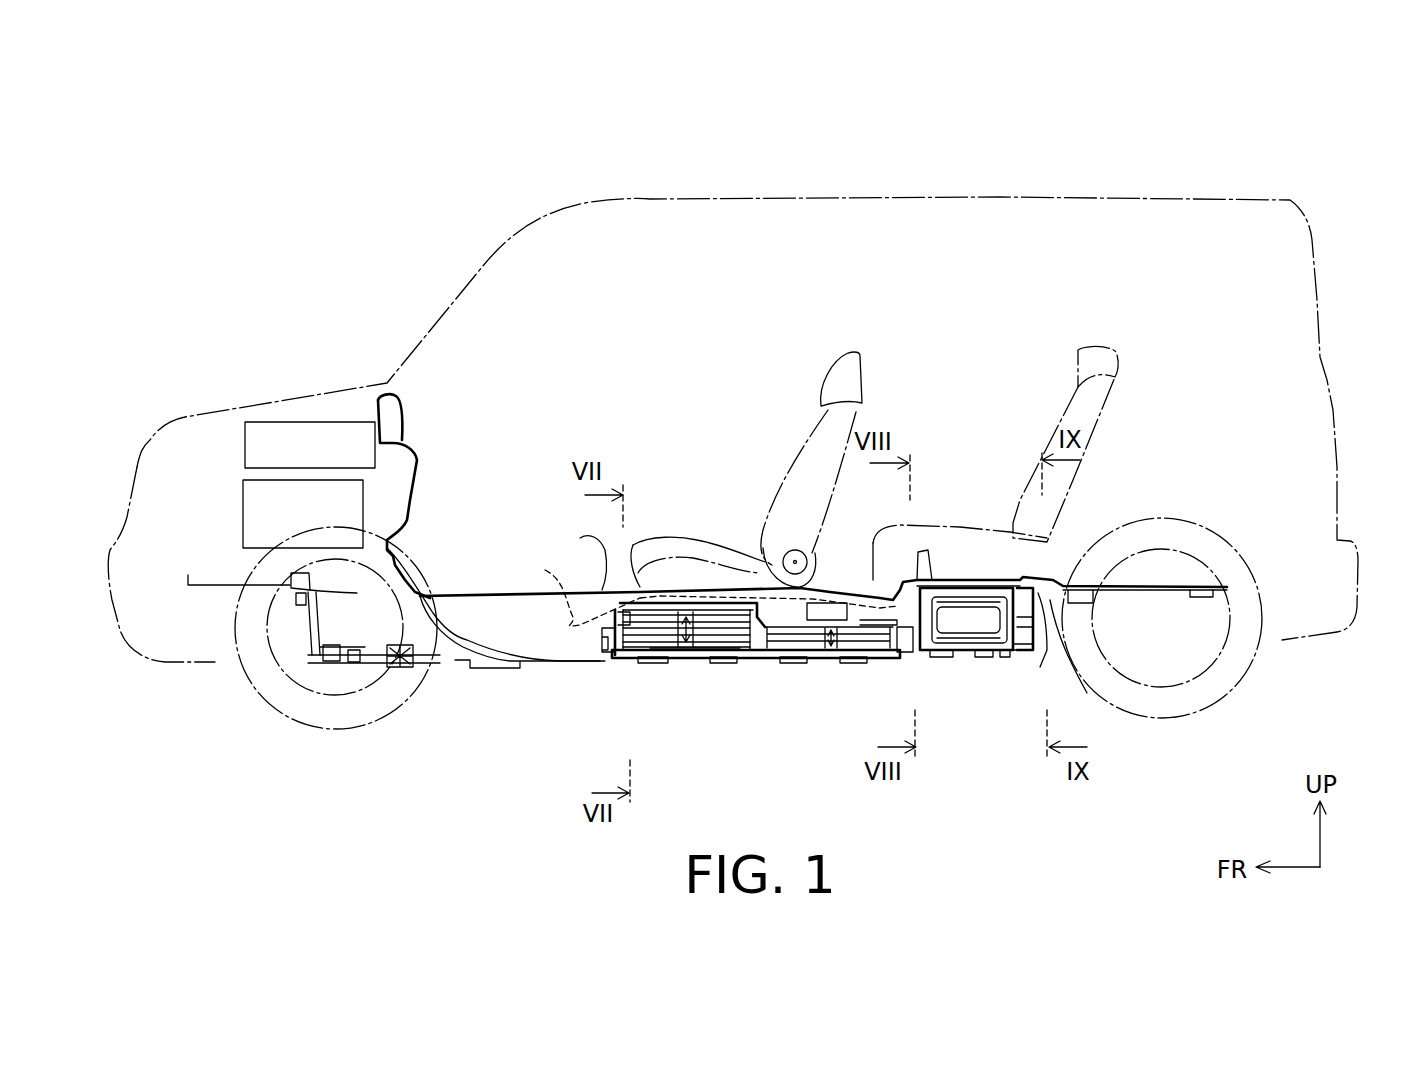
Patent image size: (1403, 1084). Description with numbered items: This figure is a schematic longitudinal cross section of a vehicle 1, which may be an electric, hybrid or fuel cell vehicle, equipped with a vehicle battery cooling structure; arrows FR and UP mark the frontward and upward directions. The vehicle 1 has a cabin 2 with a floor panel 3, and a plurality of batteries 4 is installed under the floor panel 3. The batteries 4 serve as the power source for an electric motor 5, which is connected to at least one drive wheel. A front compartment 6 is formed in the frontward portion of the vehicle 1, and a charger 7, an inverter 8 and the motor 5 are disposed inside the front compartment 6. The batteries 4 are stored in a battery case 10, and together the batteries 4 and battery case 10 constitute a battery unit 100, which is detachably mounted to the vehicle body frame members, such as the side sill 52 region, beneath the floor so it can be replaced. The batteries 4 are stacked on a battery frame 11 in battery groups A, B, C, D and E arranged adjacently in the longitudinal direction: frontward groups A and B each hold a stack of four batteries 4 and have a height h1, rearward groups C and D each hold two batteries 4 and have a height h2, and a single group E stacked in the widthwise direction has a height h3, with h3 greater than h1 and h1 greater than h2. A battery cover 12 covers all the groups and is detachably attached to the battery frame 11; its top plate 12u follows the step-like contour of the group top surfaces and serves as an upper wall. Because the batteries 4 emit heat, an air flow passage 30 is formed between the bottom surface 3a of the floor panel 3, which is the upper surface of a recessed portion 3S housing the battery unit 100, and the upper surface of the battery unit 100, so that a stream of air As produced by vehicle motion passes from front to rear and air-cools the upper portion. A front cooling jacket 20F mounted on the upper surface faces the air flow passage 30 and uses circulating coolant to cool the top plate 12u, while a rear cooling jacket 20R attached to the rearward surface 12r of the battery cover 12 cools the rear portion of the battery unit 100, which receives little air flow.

The vehicle 1 is at (1057, 197).
The cabin 2 is at (946, 303).
The floor panel 3 is at (485, 593).
The bottom surface of the floor panel 3a is at (698, 587).
The recessed portion 3S is at (768, 640).
The air flow passage 30 is at (600, 587).
The stream of air As is at (562, 582).
The batteries 4 is at (663, 643).
The electric motor 5 is at (305, 680).
The front compartment 6 is at (186, 468).
The charger 7 is at (310, 430).
The inverter 8 is at (253, 518).
The battery case 10 is at (714, 696).
The battery frame 11 is at (620, 657).
The battery cover 12 is at (583, 650).
The top plate 12u is at (707, 653).
The rearward surface 12r is at (1030, 645).
The front cooling jacket 20F is at (668, 655).
The rear cooling jacket 20R is at (1040, 612).
The side sill 52 is at (500, 657).
The battery unit 100 is at (867, 588).
The battery group A is at (630, 660).
The battery group B is at (727, 657).
The battery group C is at (780, 660).
The battery group D is at (850, 660).
The battery group E is at (970, 660).
The height of frontward battery groups h1 is at (673, 648).
The height of rearward battery groups h2 is at (827, 650).
The height of single battery group h3 is at (935, 650).